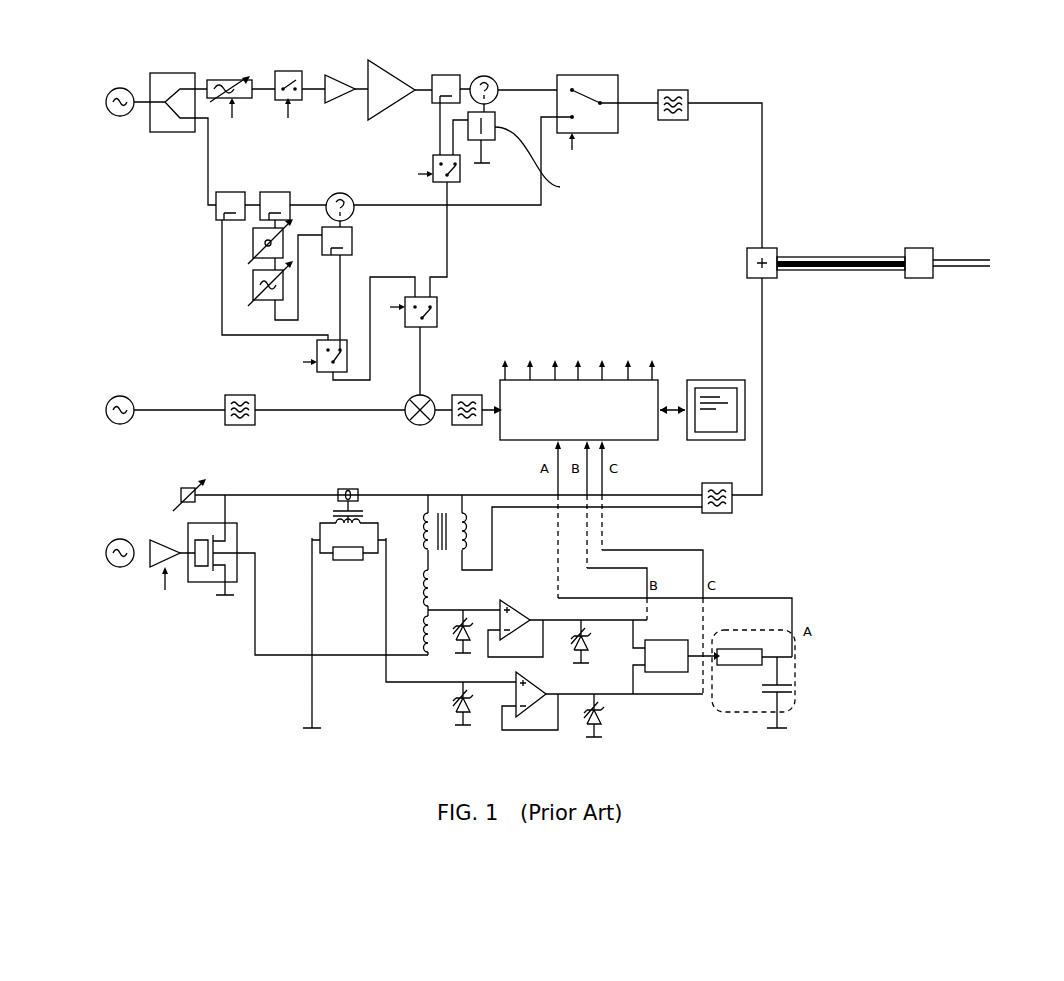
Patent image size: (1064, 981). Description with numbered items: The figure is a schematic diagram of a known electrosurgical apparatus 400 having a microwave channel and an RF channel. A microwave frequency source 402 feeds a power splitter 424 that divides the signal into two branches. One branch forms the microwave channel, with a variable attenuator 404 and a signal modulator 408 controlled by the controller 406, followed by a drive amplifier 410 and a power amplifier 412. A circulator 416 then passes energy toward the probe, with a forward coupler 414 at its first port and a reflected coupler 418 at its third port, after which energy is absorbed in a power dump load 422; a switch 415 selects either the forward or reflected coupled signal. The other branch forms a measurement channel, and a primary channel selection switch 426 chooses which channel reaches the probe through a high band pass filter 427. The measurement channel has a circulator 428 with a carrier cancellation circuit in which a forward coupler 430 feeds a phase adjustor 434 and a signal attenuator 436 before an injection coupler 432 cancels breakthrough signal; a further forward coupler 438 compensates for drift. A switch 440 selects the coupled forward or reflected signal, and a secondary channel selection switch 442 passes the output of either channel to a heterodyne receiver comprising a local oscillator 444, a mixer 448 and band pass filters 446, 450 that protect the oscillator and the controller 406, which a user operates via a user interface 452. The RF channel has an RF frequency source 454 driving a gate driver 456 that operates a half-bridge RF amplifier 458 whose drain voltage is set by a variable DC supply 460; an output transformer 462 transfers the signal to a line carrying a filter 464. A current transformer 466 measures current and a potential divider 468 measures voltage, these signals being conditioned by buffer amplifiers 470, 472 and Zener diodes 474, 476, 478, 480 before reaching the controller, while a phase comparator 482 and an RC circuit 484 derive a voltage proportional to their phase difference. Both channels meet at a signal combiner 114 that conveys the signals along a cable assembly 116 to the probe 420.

The electrosurgical apparatus 400 is at (942, 116).
The microwave frequency source 402 is at (118, 90).
The power splitter 424 is at (172, 74).
The variable attenuator 404 is at (222, 74).
The signal modulator 408 is at (284, 71).
The drive amplifier 410 is at (338, 75).
The power amplifier 412 is at (408, 50).
The forward coupler 414 is at (448, 75).
The circulator 416 is at (494, 76).
The primary channel selection switch 426 is at (592, 75).
The high band pass filter 427 is at (672, 90).
The switch 415 is at (433, 158).
The reflected coupler 418 is at (550, 164).
The power dump load 422 is at (492, 165).
The forward coupler 438 is at (240, 178).
The forward coupler 430 is at (285, 178).
The circulator 428 is at (348, 178).
The injection coupler 432 is at (352, 246).
The phase adjustor 434 is at (253, 240).
The signal attenuator 436 is at (253, 283).
The switch 440 is at (350, 342).
The secondary channel selection switch 442 is at (437, 315).
The local oscillator 444 is at (118, 396).
The band pass filter 446 is at (242, 425).
The mixer 448 is at (412, 425).
The band pass filter 450 is at (468, 425).
The controller 406 is at (577, 391).
The user interface 452 is at (712, 380).
The signal combiner 114 is at (786, 238).
The cable assembly 116 is at (840, 256).
The probe 420 is at (930, 238).
The filter 464 is at (717, 514).
The variable DC supply 460 is at (186, 488).
The RF frequency source 454 is at (118, 540).
The gate driver 456 is at (154, 564).
The RF amplifier 458 is at (234, 542).
The current transformer 466 is at (336, 502).
The output transformer 462 is at (420, 520).
The potential divider 468 is at (434, 606).
The buffer amplifier 470 is at (528, 592).
The buffer amplifier 472 is at (534, 714).
The voltage clamping Zener diode 474 is at (458, 644).
The voltage clamping Zener diode 478 is at (454, 724).
The voltage clamping Zener diode 476 is at (588, 652).
The voltage clamping Zener diode 480 is at (598, 728).
The phase comparator 482 is at (674, 634).
The RC circuit 484 is at (796, 676).